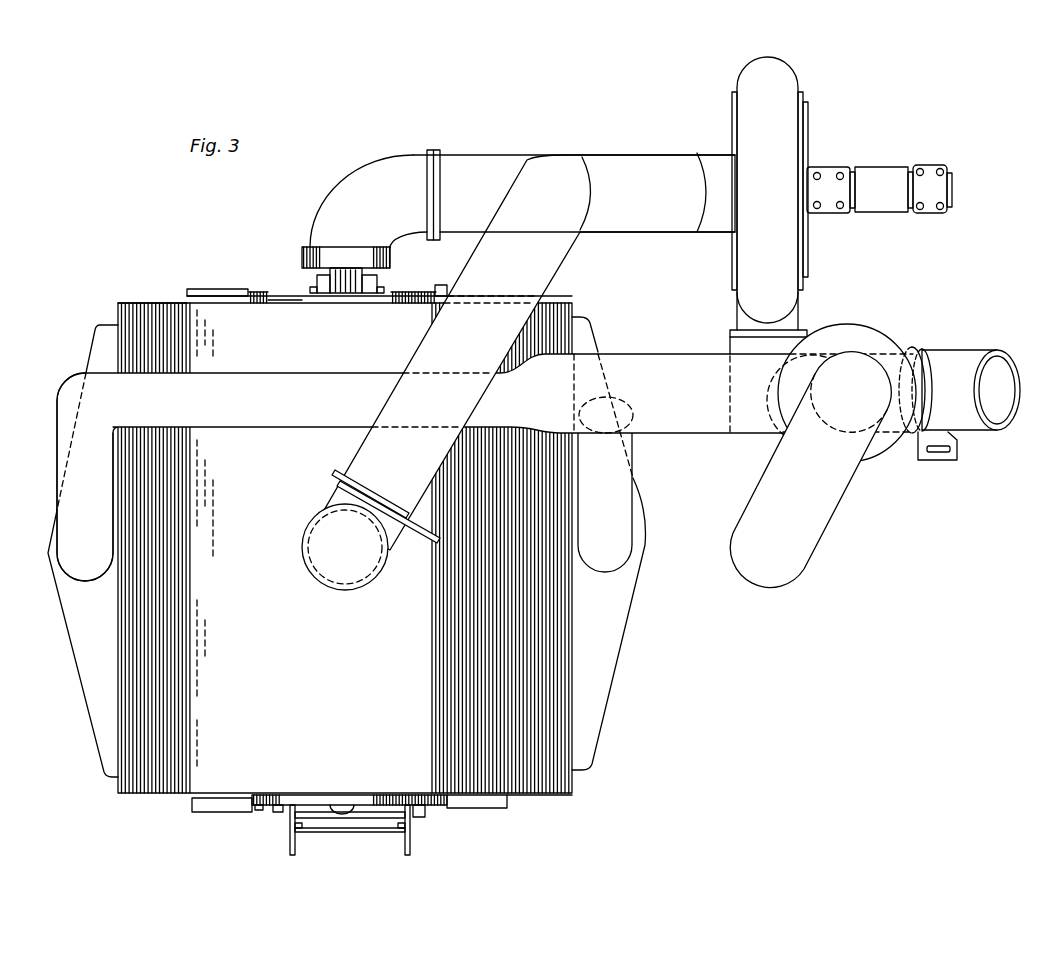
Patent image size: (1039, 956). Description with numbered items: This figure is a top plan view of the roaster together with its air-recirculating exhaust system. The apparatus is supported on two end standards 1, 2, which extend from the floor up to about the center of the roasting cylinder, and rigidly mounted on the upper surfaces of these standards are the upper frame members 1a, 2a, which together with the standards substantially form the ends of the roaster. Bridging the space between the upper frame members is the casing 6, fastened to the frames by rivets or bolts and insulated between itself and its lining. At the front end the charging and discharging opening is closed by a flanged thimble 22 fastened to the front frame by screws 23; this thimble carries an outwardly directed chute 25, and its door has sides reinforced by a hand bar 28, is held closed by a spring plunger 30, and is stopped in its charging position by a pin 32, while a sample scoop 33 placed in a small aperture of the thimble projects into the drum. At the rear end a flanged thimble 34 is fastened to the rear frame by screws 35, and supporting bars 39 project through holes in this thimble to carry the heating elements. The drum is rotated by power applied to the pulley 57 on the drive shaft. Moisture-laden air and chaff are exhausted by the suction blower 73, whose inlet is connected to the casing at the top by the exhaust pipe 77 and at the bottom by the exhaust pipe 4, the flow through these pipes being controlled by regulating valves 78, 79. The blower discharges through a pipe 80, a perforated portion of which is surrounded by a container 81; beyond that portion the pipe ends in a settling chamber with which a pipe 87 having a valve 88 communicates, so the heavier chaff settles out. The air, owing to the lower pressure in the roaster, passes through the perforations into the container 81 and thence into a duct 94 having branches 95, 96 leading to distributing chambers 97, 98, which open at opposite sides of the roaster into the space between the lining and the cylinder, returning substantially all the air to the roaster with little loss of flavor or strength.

The end standard 1 is at (222, 810).
The upper frame member 1a is at (545, 794).
The end standard 2 is at (210, 290).
The upper frame member 2a is at (158, 298).
The exhaust pipe 4 is at (386, 172).
The casing 6 is at (345, 548).
The flanged thimble 22 is at (262, 806).
The screws 23 is at (280, 813).
The chute 25 is at (350, 834).
The hand bar 28 is at (310, 822).
The spring plunger 30 is at (420, 818).
The pin 32 is at (402, 826).
The sample scoop 33 is at (340, 800).
The flanged thimble 34 is at (300, 306).
The screws 35 is at (258, 291).
The supporting bars 39 is at (314, 284).
The pulley 57 is at (345, 252).
The suction blower 73 is at (752, 108).
The exhaust pipe 77 is at (612, 160).
The regulating valve 78 is at (441, 168).
The regulating valve 79 is at (334, 484).
The pipe 80 is at (814, 536).
The container 81 is at (852, 334).
The pipe 87 is at (962, 362).
The valve 88 is at (920, 455).
The duct 94 is at (655, 364).
The branch 95 is at (610, 516).
The branch 96 is at (72, 497).
The distributing chamber 97 is at (630, 577).
The distributing chamber 98 is at (76, 624).